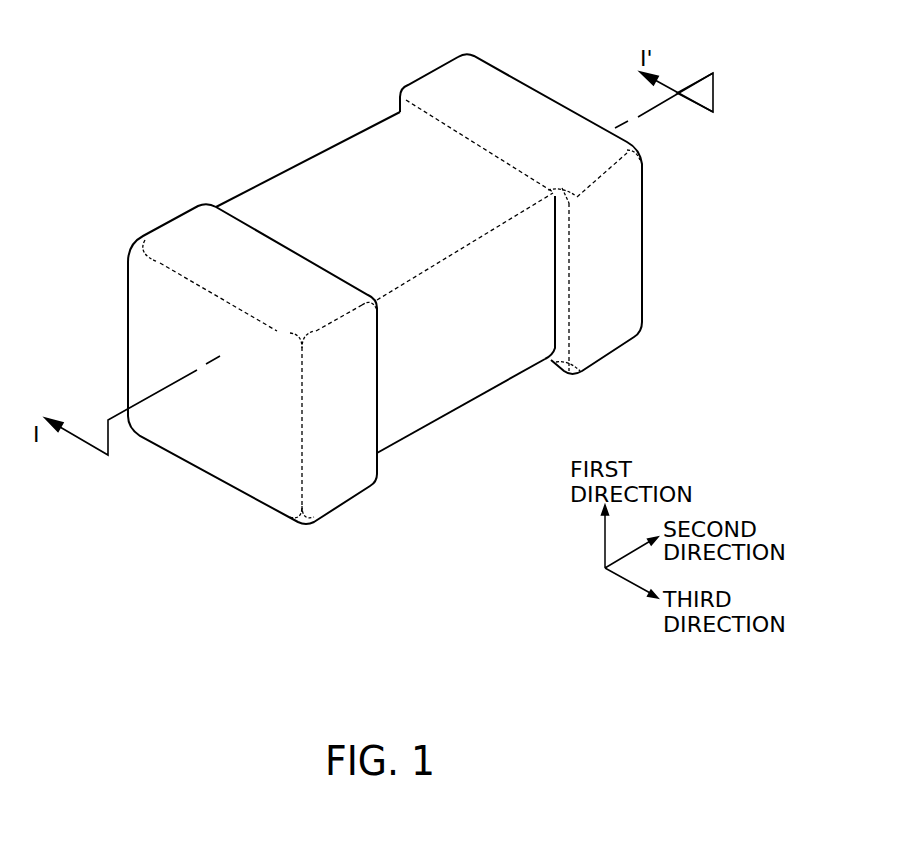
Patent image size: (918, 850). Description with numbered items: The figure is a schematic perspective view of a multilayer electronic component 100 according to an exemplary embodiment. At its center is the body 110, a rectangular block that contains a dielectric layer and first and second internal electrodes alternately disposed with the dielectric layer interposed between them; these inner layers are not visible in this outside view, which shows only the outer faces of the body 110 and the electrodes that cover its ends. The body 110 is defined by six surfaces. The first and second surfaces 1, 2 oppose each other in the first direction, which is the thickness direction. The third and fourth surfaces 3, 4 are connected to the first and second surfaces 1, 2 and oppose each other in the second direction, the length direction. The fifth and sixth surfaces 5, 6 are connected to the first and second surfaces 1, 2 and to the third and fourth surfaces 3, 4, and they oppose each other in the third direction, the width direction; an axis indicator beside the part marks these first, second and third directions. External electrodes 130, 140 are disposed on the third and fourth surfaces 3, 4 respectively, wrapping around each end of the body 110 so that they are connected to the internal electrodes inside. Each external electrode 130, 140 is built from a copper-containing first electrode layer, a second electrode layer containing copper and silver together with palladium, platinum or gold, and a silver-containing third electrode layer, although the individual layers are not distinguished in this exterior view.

The multilayer electronic component 100 is at (164, 85).
The body 110 is at (263, 223).
The external electrode 130 is at (191, 237).
The external electrode 140 is at (445, 90).
The first surface 1 is at (435, 388).
The second surface 2 is at (393, 152).
The third surface 3 is at (213, 432).
The fourth surface 4 is at (592, 229).
The fifth surface 5 is at (487, 368).
The sixth surface 6 is at (332, 176).